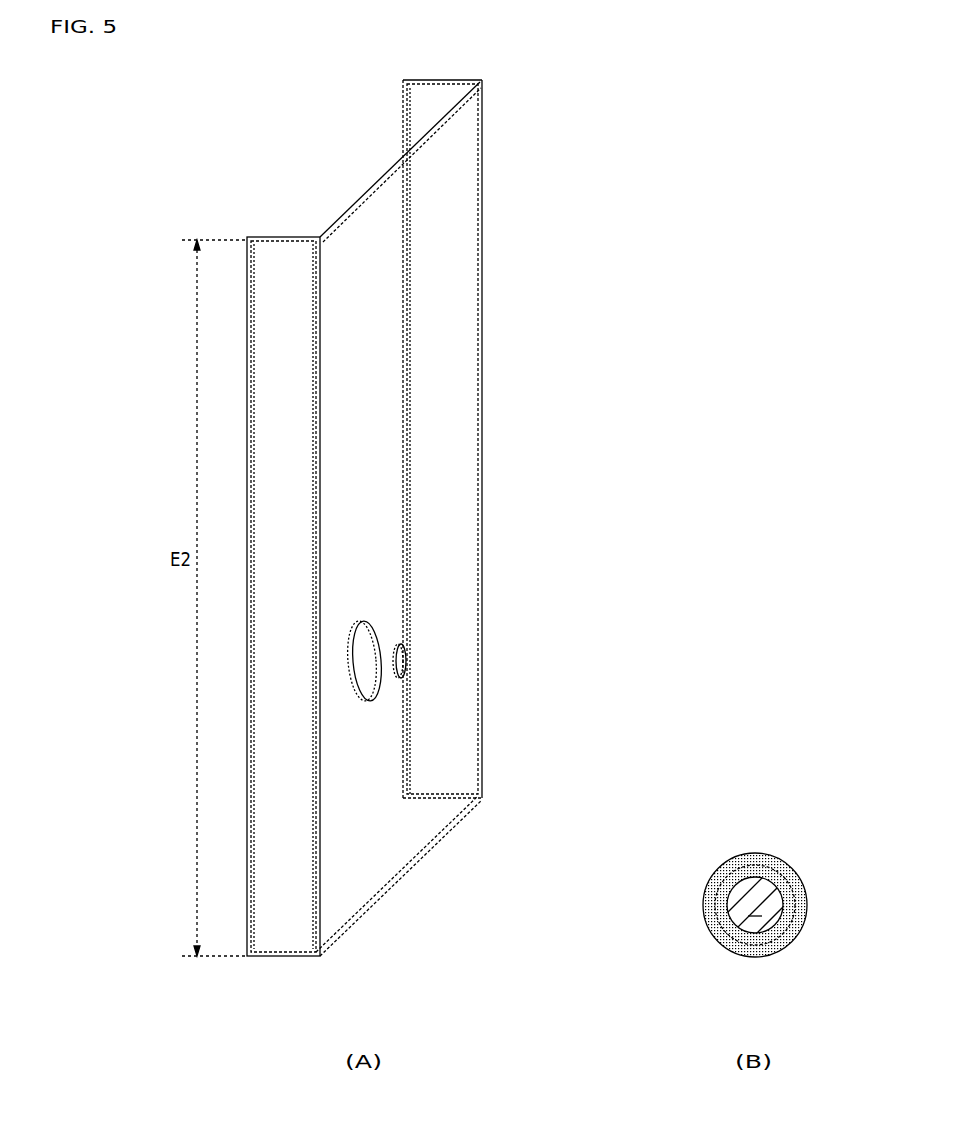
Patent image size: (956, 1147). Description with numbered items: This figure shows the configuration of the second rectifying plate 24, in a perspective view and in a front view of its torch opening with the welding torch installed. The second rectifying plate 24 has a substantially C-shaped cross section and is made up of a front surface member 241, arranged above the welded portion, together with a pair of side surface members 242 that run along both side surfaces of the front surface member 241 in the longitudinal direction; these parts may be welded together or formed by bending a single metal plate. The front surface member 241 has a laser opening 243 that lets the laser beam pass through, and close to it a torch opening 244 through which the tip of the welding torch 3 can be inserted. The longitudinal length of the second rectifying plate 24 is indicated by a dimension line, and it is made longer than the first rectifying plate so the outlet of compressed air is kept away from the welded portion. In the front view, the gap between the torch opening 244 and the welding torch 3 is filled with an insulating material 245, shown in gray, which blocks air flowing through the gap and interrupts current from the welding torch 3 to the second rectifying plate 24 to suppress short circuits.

The second rectifying plate 24 is at (528, 148).
The front surface member 241 is at (458, 293).
The side surface members 242 is at (413, 80).
The laser opening 243 is at (410, 661).
The torch opening 244 is at (596, 767).
The insulating material 245 is at (751, 852).
The welding torch 3 is at (756, 906).